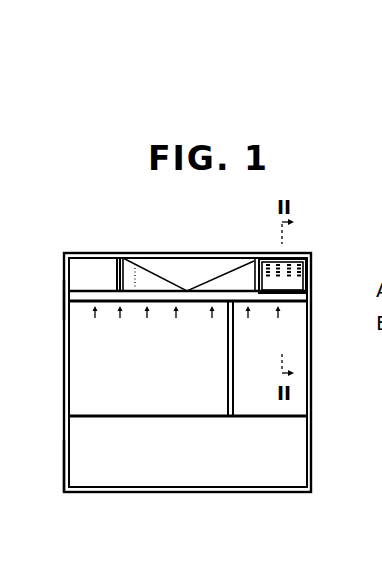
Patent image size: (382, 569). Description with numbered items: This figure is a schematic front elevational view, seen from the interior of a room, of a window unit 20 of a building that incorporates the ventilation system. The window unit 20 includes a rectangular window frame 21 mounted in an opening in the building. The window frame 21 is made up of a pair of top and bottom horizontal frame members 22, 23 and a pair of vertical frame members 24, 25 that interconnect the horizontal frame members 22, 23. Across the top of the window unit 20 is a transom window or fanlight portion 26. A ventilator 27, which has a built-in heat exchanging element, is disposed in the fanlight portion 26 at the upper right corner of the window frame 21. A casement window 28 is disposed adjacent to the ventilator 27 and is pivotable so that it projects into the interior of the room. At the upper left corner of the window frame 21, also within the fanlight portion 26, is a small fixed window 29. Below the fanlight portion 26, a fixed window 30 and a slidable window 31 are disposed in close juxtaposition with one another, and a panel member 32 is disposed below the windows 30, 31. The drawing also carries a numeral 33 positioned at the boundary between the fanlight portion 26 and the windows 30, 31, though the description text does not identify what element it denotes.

The window unit 20 is at (252, 494).
The window frame 21 is at (65, 306).
The top horizontal frame member 22 is at (143, 256).
The bottom horizontal frame member 23 is at (116, 490).
The vertical frame member 24 is at (64, 456).
The vertical frame member 25 is at (310, 456).
The fanlight portion 26 is at (213, 268).
The ventilator 27 is at (297, 278).
The casement window 28 is at (186, 258).
The small fixed window 29 is at (99, 268).
The fixed window 30 is at (73, 374).
The slidable window 31 is at (293, 326).
The panel member 32 is at (180, 472).
The distribution bar 33 is at (174, 303).